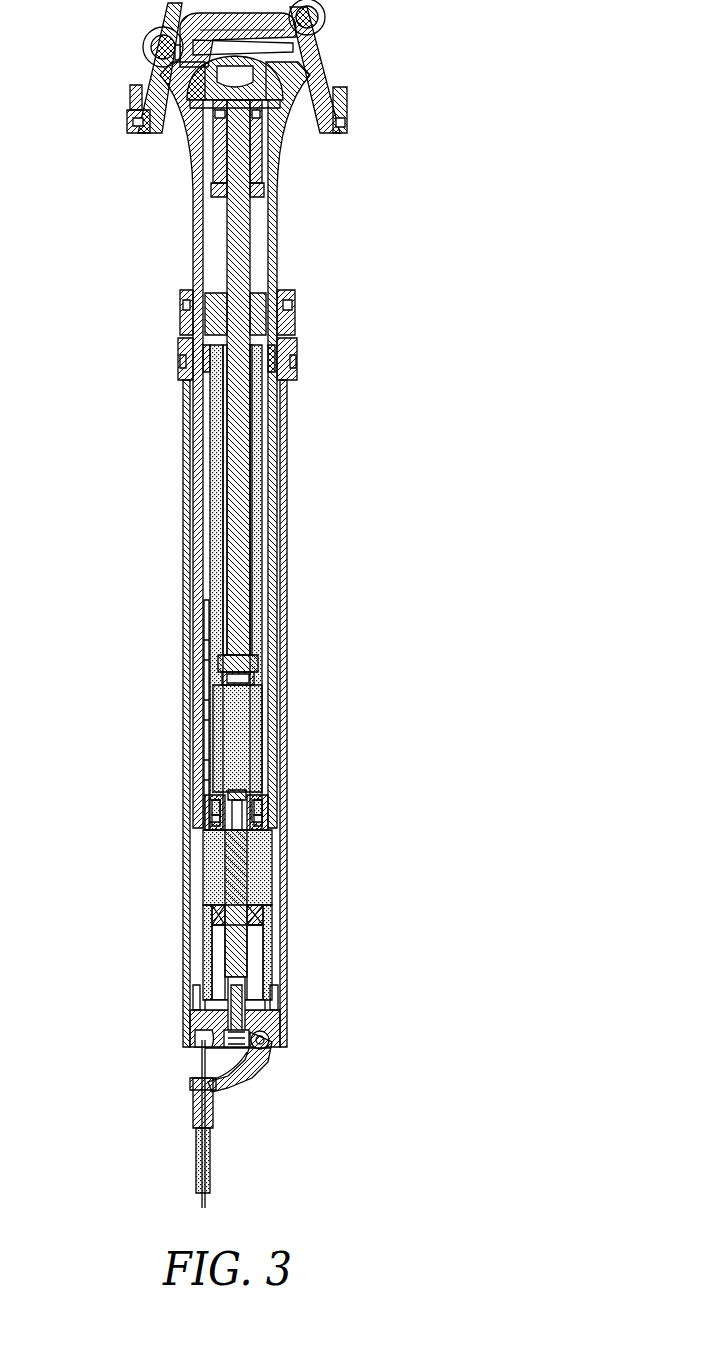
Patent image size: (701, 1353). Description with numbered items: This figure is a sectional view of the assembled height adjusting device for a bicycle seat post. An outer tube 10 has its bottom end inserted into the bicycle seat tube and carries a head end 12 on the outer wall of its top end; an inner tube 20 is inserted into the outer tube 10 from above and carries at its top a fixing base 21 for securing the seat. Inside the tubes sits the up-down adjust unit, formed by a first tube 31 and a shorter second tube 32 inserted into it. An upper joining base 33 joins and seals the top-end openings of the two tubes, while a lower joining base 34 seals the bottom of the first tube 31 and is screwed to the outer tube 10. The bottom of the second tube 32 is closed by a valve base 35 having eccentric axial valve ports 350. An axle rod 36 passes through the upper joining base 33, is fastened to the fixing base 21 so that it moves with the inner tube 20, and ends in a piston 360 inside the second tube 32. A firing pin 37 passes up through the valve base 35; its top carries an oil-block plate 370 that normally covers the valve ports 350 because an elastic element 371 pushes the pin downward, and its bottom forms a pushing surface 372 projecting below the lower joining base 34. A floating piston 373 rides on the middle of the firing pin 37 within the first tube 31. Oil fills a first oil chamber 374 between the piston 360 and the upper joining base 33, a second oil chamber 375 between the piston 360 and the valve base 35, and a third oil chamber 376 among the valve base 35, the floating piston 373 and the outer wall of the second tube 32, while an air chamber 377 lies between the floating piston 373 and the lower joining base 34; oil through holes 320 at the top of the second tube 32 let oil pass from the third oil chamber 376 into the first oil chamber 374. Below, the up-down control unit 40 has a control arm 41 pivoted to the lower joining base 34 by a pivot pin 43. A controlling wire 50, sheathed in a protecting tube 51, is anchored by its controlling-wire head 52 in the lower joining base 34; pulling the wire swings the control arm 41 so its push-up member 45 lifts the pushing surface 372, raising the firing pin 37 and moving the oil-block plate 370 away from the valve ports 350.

The outer tube 10 is at (283, 597).
The head end 12 is at (293, 327).
The inner tube 20 is at (278, 257).
The fixing base 21 is at (347, 97).
The first tube 31 is at (204, 710).
The second tube 32 is at (213, 642).
The oil through holes 320 is at (208, 360).
The upper joining base 33 is at (262, 306).
The lower joining base 34 is at (270, 1020).
The valve base 35 is at (258, 805).
The valve ports 350 is at (213, 802).
The axle rod 36 is at (240, 212).
The piston 360 is at (258, 668).
The firing pin 37 is at (240, 893).
The oil-block plate 370 is at (262, 790).
The elastic element 371 is at (225, 827).
The pushing surface 372 is at (225, 1050).
The floating piston 373 is at (260, 925).
The first oil chamber 374 is at (253, 550).
The second oil chamber 375 is at (245, 737).
The third oil chamber 376 is at (258, 858).
The air chamber 377 is at (255, 962).
The up-down control unit 40 is at (245, 1100).
The control arm 41 is at (255, 1065).
The pivot pin 43 is at (270, 1040).
The push-up member 45 is at (250, 1058).
The controlling wire 50 is at (200, 1198).
The protecting tube 51 is at (193, 1108).
The controlling-wire head 52 is at (196, 1040).